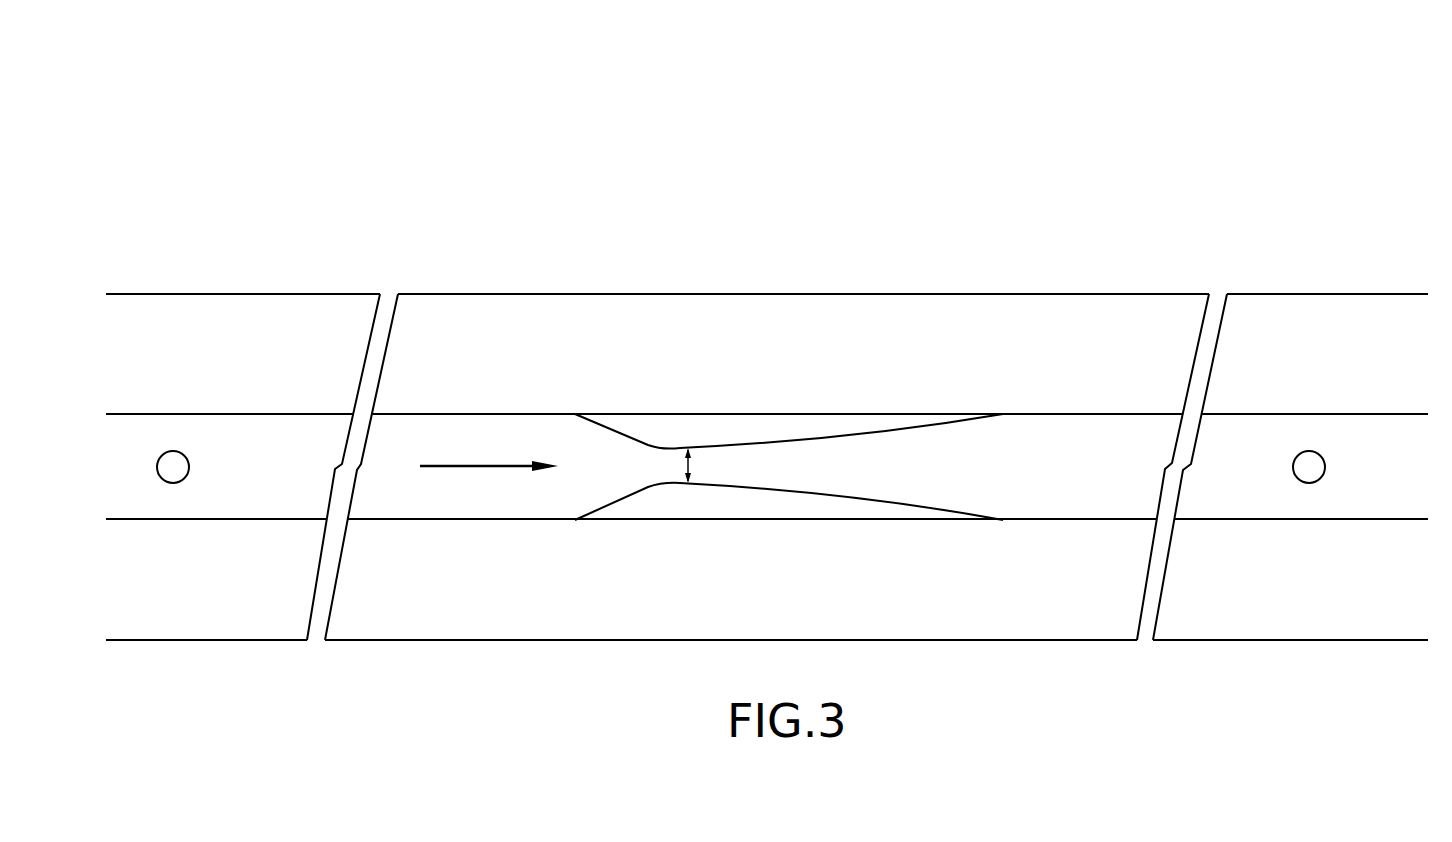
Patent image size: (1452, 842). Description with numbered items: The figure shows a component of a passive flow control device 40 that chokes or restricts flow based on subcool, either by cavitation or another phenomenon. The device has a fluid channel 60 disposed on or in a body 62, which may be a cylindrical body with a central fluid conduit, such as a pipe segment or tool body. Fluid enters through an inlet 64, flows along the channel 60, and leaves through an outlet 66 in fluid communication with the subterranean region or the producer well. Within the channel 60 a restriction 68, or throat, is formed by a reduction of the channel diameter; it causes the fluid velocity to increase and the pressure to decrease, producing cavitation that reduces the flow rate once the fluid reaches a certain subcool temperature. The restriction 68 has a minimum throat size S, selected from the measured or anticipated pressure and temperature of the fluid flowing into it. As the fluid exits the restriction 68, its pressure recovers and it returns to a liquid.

The flow control device 40 is at (767, 390).
The fluid channel 60 is at (1065, 495).
The body 62 is at (1055, 325).
The inlet 64 is at (173, 470).
The outlet 66 is at (1309, 470).
The restriction 68 is at (762, 462).
The throat size S is at (684, 466).